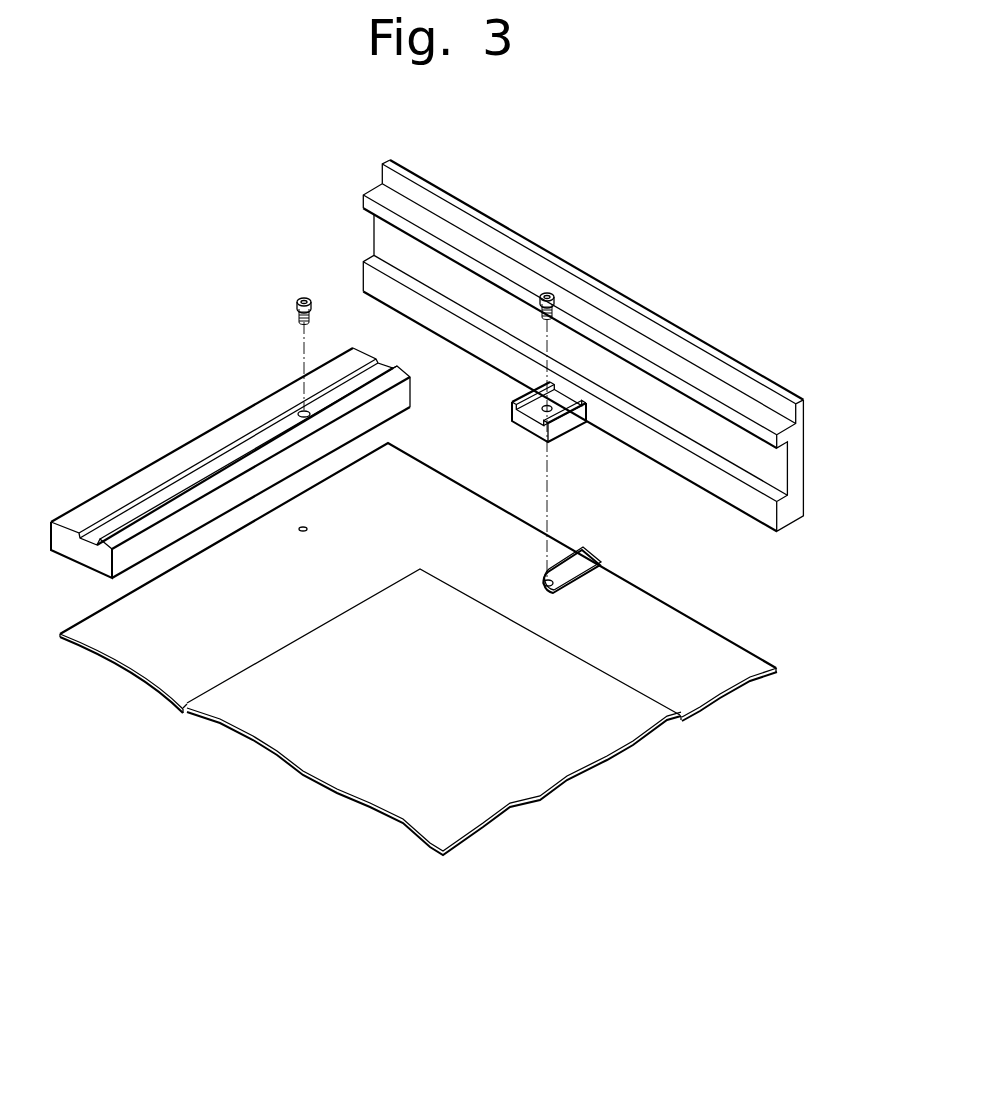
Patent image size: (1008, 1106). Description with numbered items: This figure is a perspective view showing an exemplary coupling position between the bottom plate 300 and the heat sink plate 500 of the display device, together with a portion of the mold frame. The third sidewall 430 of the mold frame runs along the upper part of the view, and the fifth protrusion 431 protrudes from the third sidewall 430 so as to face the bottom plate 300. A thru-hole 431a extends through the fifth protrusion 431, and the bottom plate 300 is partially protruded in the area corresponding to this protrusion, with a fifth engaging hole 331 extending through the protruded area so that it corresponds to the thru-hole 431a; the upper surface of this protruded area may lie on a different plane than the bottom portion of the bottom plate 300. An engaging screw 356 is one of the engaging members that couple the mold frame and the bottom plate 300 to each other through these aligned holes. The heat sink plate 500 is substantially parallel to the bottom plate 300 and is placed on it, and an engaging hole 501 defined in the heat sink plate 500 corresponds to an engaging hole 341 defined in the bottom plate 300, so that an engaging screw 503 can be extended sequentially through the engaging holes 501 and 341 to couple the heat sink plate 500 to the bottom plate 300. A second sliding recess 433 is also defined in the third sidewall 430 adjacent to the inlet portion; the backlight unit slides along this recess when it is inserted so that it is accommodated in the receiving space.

The bottom plate 300 is at (767, 682).
The fifth engaging hole 331 is at (547, 578).
The engaging hole 341 is at (302, 528).
The engaging screw 356 is at (547, 294).
The third sidewall 430 is at (797, 437).
The fifth protrusion 431 is at (566, 428).
The thru-hole 431a is at (547, 405).
The second sliding recess 433 is at (779, 475).
The heat sink plate 500 is at (200, 446).
The engaging hole 501 is at (301, 411).
The engaging screw 503 is at (300, 298).